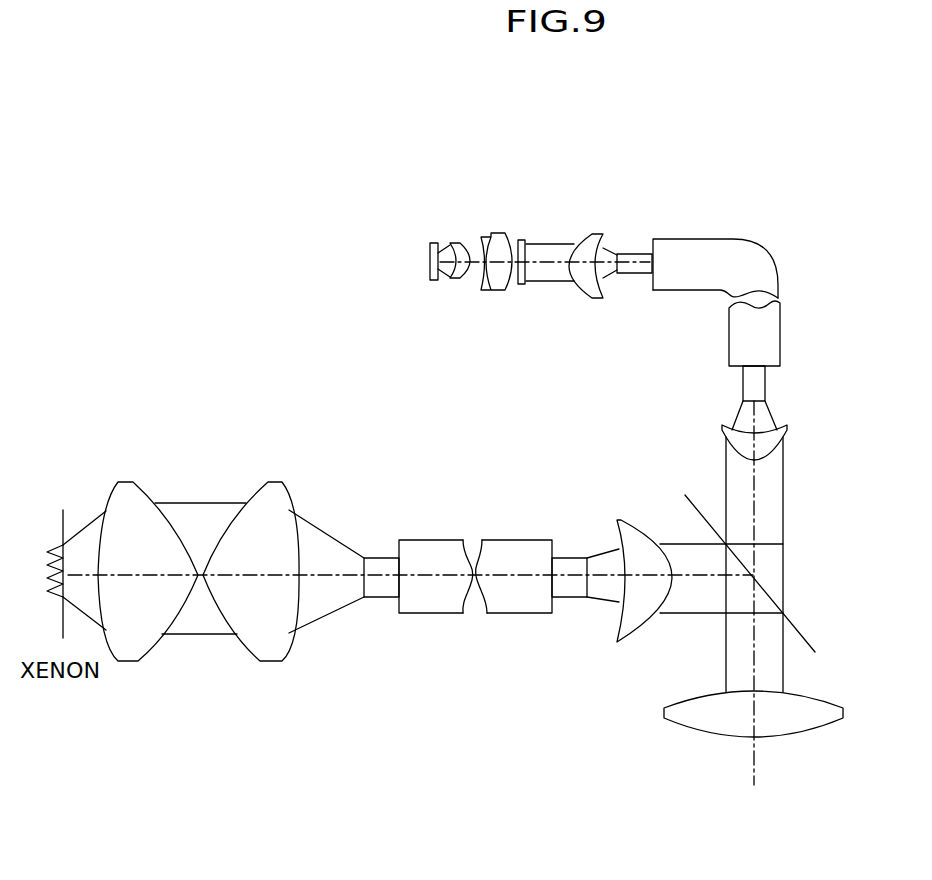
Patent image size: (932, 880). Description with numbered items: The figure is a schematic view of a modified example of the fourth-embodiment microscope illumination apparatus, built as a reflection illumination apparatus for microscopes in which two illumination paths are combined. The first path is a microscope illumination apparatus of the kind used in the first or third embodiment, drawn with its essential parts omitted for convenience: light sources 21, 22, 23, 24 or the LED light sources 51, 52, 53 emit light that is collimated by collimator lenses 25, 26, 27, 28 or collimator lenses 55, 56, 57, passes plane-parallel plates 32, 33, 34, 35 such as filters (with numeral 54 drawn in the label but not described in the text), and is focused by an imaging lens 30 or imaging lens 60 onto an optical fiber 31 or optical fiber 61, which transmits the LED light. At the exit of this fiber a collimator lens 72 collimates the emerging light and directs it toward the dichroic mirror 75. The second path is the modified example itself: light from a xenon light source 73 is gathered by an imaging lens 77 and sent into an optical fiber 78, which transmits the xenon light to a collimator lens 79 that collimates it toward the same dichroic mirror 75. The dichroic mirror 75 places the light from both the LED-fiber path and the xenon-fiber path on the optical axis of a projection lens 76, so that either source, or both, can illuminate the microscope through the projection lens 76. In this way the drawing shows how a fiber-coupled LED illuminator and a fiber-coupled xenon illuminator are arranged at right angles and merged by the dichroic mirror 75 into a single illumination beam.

The light source 21 is at (618, 176).
The light source 22 is at (618, 176).
The light source 23 is at (618, 176).
The light source 24 is at (618, 176).
The LED light source 51 is at (450, 232).
The collimator lens 25 is at (657, 201).
The collimator lens 26 is at (657, 201).
The collimator lens 27 is at (657, 201).
The collimator lens 28 is at (657, 201).
The collimator lens 55 is at (657, 201).
The collimator lens 56 is at (657, 201).
The collimator lens 57 is at (508, 232).
The plane-parallel plate 32 is at (707, 219).
The plane-parallel plate 33 is at (707, 219).
The plane-parallel plate 34 is at (707, 219).
The plane-parallel plate 35 is at (707, 219).
The LED light source 52 is at (707, 219).
The LED light source 53 is at (707, 219).
The filter 54 is at (540, 232).
The imaging lens 30 is at (631, 244).
The imaging lens 60 is at (612, 232).
The optical fiber 31 is at (766, 326).
The optical fiber 61 is at (615, 232).
The collimator lens 72 is at (784, 437).
The xenon light source 73 is at (62, 528).
The dichroic mirror 75 is at (798, 631).
The projection lens 76 is at (823, 703).
The imaging lens 77 is at (300, 467).
The optical fiber 78 is at (577, 467).
The collimator lens 79 is at (631, 520).